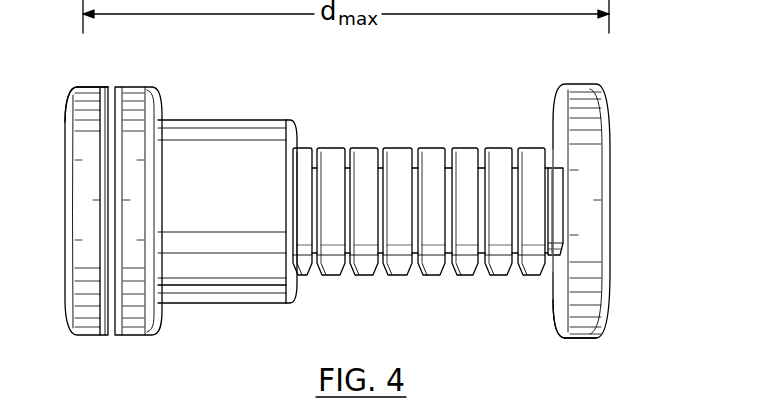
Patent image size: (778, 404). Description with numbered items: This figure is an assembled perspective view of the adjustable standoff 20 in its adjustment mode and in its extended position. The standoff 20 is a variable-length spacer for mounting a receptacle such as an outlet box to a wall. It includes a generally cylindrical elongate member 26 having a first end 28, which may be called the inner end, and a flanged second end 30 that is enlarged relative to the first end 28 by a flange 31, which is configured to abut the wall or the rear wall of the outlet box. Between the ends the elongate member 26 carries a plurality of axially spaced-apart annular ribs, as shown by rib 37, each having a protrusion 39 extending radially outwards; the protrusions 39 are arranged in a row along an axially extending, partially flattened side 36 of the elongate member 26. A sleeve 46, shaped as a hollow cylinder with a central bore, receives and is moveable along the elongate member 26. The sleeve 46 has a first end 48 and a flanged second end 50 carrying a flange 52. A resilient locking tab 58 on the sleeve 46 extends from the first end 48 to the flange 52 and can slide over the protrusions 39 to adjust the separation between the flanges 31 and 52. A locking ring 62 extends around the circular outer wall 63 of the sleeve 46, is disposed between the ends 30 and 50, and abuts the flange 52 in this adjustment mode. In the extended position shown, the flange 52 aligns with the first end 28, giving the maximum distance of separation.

The adjustable standoff 20 is at (666, 77).
The elongate member 26 is at (618, 139).
The first end 28 is at (63, 174).
The flanged second end 30 is at (602, 305).
The flange 31 is at (582, 339).
The partially flattened side 36 is at (537, 257).
The rib 37 is at (398, 155).
The protrusion 39 is at (397, 265).
The sleeve 46 is at (75, 89).
The first end 48 is at (298, 128).
The flanged second end 50 is at (68, 135).
The flange 52 is at (98, 92).
The locking tab 58 is at (228, 303).
The locking ring 62 is at (141, 95).
The circular outer wall 63 is at (224, 187).